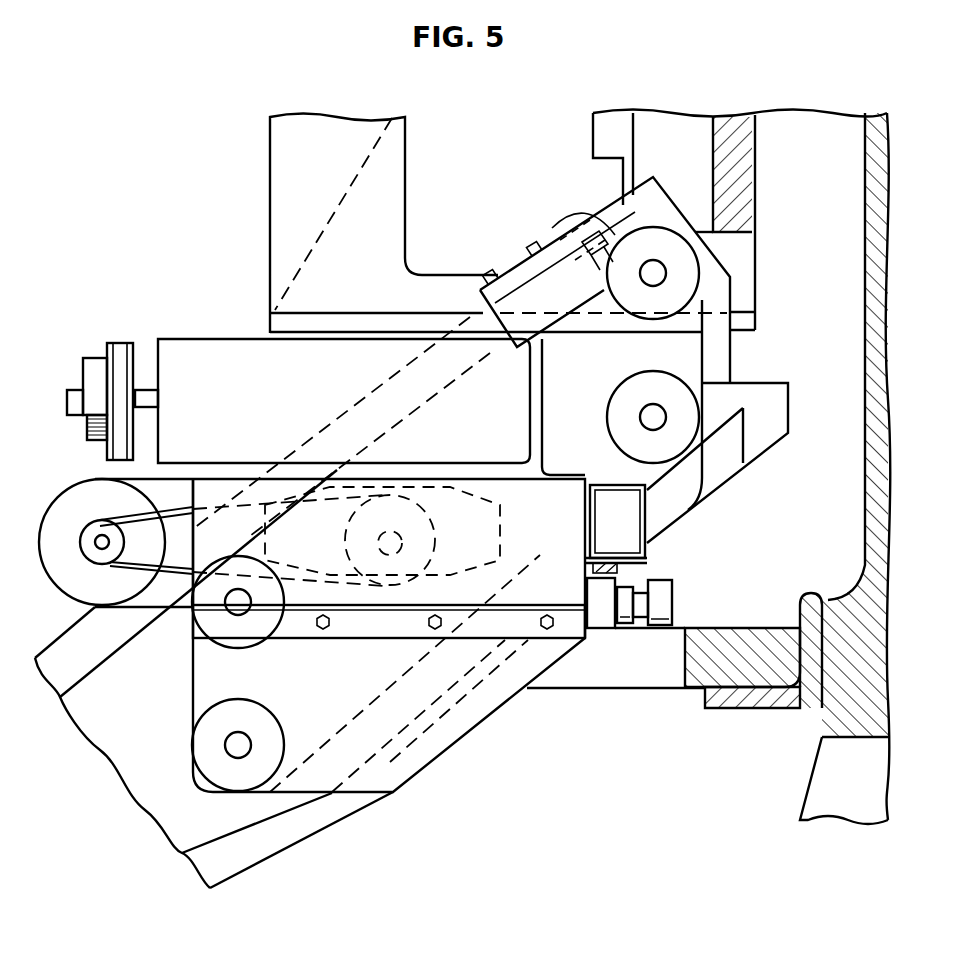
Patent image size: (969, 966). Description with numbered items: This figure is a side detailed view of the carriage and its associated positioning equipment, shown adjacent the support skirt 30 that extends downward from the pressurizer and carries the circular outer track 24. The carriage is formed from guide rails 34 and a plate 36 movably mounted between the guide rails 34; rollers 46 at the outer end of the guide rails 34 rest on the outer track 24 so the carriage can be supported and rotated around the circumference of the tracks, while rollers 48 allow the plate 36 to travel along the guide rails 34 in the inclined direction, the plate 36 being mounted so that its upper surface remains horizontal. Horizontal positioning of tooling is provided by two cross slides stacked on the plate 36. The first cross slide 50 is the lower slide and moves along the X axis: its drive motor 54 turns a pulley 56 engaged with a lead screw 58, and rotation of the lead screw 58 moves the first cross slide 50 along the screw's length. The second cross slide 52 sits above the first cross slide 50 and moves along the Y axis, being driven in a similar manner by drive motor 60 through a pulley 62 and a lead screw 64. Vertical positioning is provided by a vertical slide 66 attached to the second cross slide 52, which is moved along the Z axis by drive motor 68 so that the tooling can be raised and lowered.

The outer track 24 is at (712, 628).
The support skirt 30 is at (863, 162).
The guide rails 34 is at (156, 752).
The plate 36 is at (378, 640).
The rollers 46 is at (665, 585).
The rollers 48 is at (648, 300).
The first cross slide 50 is at (553, 512).
The second cross slide 52 is at (755, 383).
The drive motor 54 is at (68, 497).
The pulley 56 is at (170, 506).
The lead screw 58 is at (437, 520).
The drive motor 60 is at (295, 390).
The pulley 62 is at (120, 343).
The lead screw 64 is at (72, 390).
The vertical slide 66 is at (690, 162).
The drive motor 68 is at (323, 167).